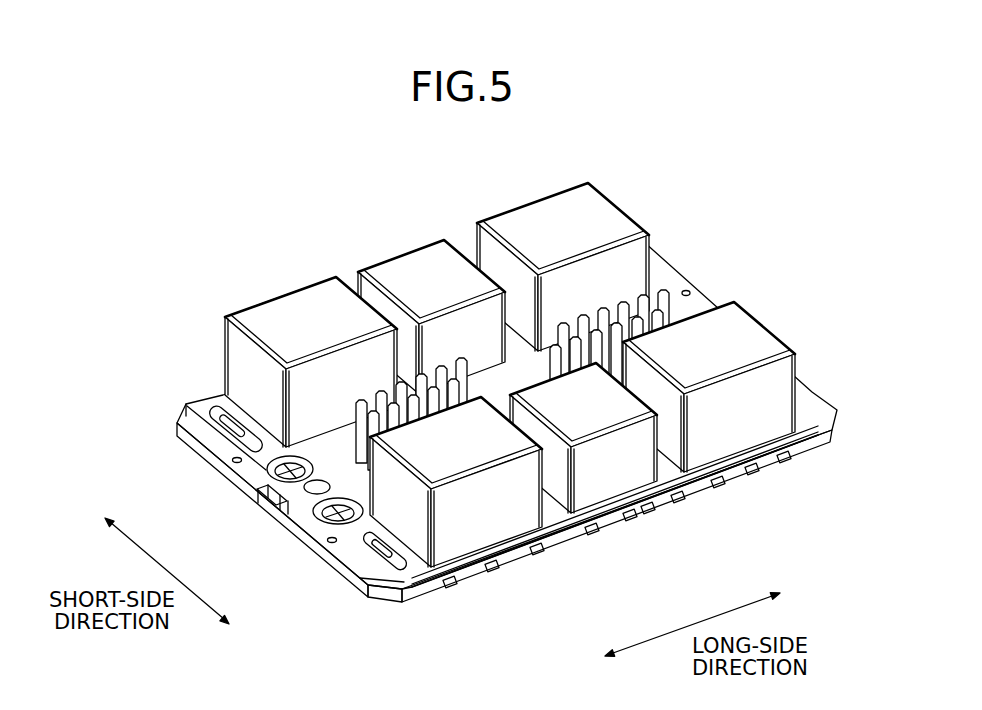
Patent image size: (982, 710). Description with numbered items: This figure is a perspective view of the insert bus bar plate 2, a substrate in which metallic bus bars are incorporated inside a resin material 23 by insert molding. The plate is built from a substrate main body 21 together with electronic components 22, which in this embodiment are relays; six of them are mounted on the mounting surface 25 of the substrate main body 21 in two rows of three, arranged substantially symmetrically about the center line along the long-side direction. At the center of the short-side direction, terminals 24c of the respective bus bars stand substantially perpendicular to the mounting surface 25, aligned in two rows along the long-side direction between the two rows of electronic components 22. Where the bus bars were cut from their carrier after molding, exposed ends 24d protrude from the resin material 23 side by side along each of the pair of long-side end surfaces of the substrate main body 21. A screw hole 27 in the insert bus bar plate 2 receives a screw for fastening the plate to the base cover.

The insert bus bar plate 2 is at (226, 203).
The substrate main body 21 is at (507, 412).
The electronic component 22 is at (524, 401).
The resin material 23 is at (320, 592).
The terminals 24c is at (442, 370).
The exposed ends 24d is at (536, 556).
The mounting surface 25 is at (370, 564).
The screw hole 27 is at (316, 488).